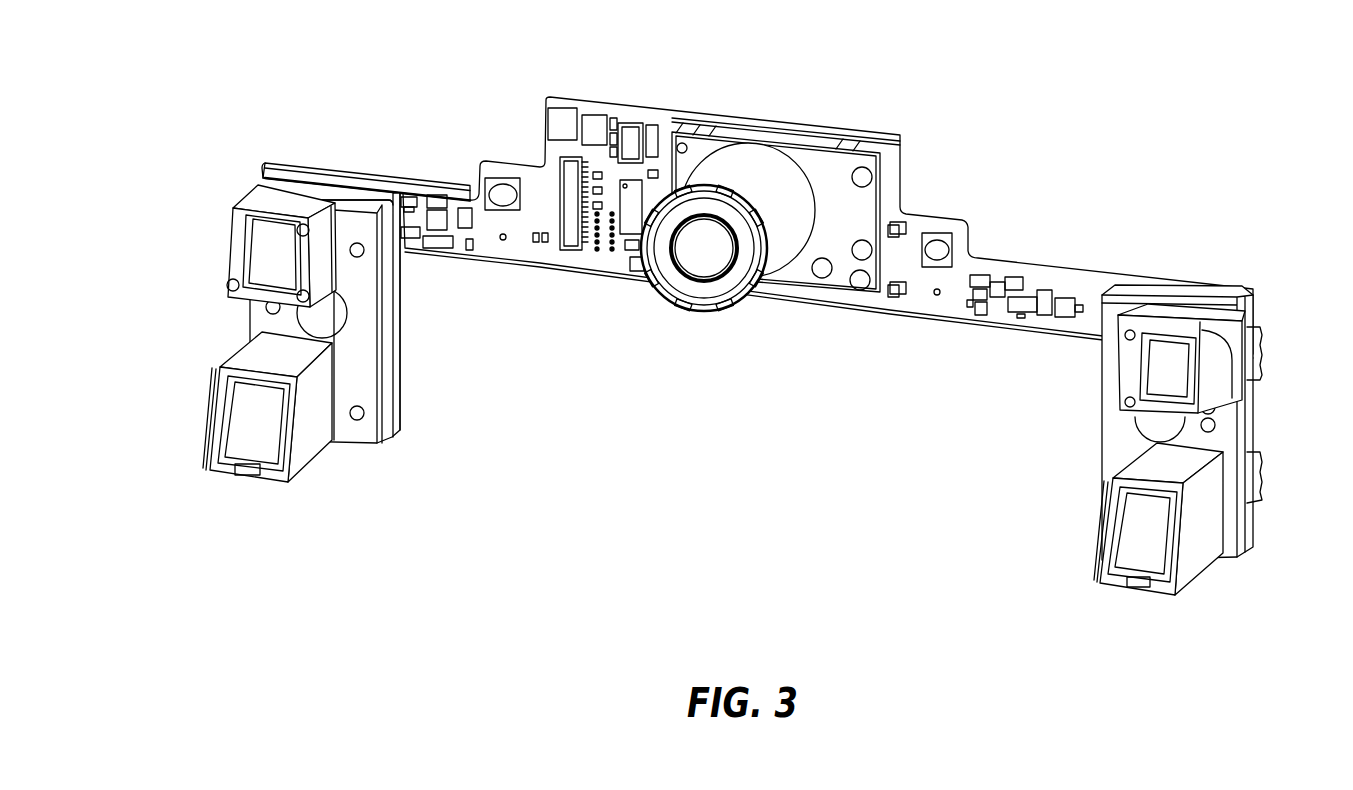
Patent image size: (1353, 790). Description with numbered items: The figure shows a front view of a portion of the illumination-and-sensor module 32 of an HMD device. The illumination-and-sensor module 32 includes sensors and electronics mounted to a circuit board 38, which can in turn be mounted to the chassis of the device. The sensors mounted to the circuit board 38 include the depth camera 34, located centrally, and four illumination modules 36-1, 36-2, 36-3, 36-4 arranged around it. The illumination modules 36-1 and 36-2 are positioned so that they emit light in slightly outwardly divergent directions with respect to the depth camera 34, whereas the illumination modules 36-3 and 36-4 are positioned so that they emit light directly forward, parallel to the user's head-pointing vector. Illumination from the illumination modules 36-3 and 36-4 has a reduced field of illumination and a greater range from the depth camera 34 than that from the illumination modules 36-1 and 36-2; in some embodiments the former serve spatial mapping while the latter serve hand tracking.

The illumination-and-sensor module 32 is at (734, 308).
The depth camera 34 is at (801, 168).
The illumination module 36-1 is at (1223, 362).
The illumination module 36-2 is at (257, 263).
The illumination module 36-3 is at (247, 412).
The illumination module 36-4 is at (1205, 520).
The circuit board 38 is at (1095, 272).